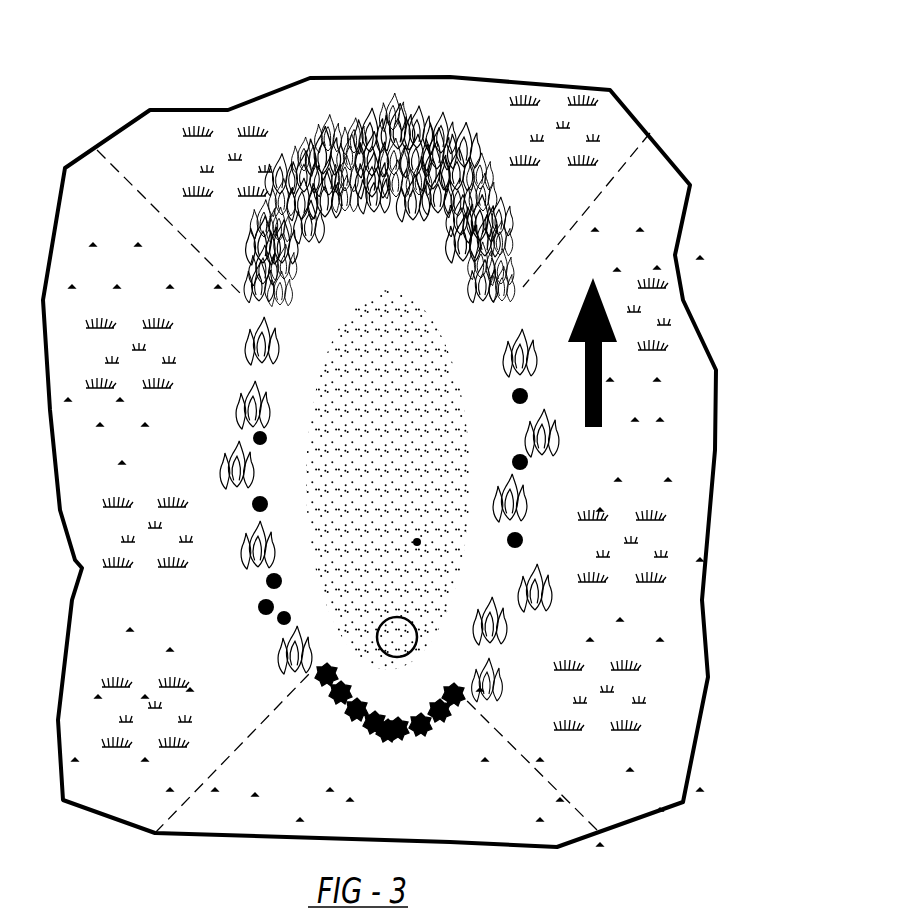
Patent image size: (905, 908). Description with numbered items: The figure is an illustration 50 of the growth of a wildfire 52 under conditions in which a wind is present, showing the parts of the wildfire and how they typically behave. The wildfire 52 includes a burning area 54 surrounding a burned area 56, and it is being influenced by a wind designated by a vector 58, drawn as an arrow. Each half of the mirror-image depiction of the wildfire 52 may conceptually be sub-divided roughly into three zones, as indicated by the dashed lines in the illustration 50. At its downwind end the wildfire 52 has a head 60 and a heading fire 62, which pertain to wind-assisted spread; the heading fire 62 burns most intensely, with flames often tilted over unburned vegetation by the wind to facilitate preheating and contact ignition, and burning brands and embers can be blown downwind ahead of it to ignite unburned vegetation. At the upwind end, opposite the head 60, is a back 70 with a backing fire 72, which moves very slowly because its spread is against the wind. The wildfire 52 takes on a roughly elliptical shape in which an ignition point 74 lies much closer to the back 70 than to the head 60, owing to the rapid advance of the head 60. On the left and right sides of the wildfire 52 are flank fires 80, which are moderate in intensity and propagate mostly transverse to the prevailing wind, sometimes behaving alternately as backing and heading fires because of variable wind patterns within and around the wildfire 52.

The illustration 50 is at (671, 58).
The wildfire 52 is at (197, 575).
The burning area 54 is at (277, 287).
The burned area 56 is at (417, 542).
The vector 58 is at (603, 362).
The head 60 is at (400, 258).
The heading fire 62 is at (393, 160).
The back 70 is at (408, 711).
The backing fire 72 is at (388, 733).
The ignition point 74 is at (383, 623).
The flank fires 80 is at (223, 382).